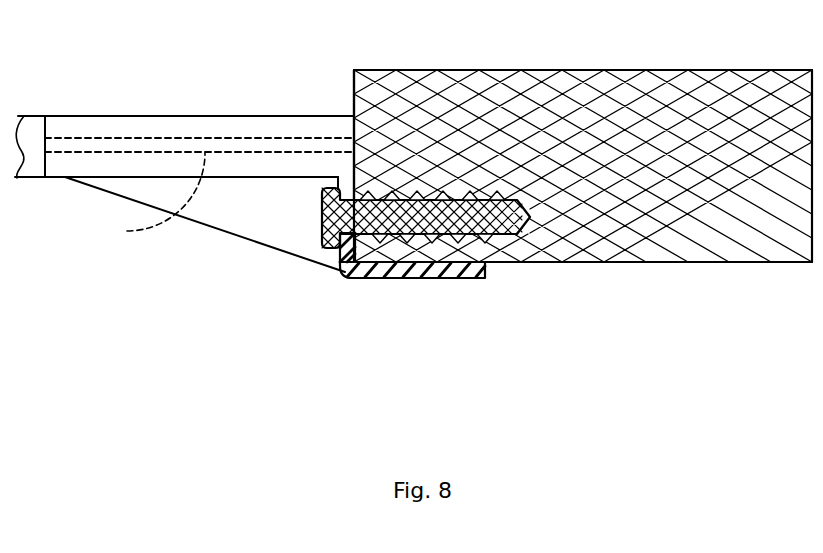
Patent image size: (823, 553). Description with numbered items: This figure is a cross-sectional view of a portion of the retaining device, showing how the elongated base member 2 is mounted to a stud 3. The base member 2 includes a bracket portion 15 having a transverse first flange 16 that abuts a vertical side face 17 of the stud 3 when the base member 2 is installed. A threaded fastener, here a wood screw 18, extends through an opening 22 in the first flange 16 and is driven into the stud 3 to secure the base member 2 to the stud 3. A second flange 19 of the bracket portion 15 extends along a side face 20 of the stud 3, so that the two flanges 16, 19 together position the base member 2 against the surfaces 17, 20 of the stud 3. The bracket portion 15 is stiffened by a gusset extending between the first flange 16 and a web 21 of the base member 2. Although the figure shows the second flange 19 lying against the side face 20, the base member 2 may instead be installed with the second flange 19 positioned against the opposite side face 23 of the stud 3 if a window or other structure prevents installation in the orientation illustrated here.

The elongated base member 2 is at (88, 116).
The stud 3 is at (579, 70).
The bracket portion 15 is at (101, 190).
The first flange 16 is at (333, 169).
The vertical side face 17 is at (354, 90).
The threaded fastener 18 is at (322, 213).
The second flange 19 is at (433, 280).
The side face 20 is at (655, 262).
The web 21 is at (151, 197).
The opening 22 is at (345, 274).
The opposite side face 23 is at (704, 70).